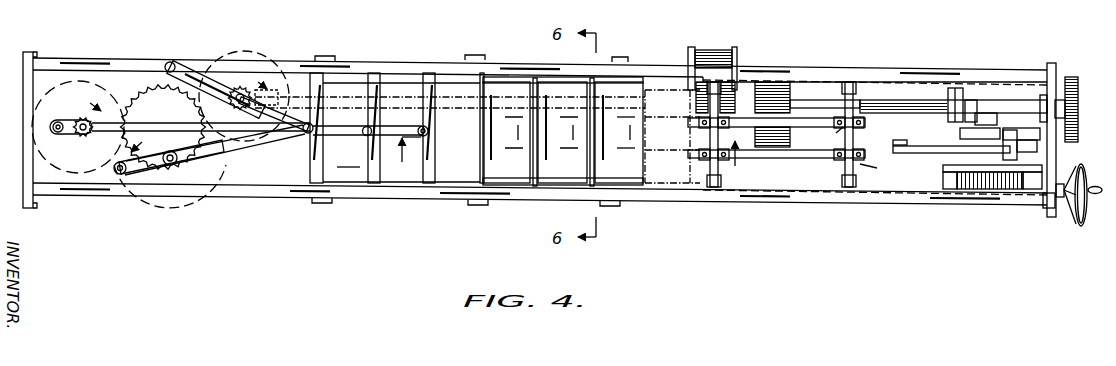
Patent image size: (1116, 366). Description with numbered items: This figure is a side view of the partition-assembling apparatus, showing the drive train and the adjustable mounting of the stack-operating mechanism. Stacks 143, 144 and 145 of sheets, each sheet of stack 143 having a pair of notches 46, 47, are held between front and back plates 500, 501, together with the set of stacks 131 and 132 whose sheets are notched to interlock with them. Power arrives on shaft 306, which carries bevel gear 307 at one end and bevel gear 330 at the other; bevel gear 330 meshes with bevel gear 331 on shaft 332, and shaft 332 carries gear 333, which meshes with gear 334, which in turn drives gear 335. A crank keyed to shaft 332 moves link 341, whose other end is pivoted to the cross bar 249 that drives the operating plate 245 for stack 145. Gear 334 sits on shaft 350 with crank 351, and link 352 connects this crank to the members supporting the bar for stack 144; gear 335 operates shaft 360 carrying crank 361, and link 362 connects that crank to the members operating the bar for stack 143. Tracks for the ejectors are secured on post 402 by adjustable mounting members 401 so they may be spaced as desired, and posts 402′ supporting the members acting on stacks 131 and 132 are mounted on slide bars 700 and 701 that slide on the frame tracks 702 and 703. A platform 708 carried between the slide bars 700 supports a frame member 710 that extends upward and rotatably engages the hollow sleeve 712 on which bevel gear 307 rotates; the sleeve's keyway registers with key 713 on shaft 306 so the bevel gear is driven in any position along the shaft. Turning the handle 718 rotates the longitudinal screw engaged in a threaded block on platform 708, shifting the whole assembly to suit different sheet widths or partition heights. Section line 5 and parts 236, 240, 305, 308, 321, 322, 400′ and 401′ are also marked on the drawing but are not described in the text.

The section line 5- 5 is at (573, 158).
The notch 46 is at (608, 116).
The notch 47 is at (607, 167).
The stack 131 is at (713, 48).
The stack 132 is at (767, 92).
The stack 143 is at (619, 132).
The stack 144 is at (562, 132).
The stack 145 is at (506, 132).
The lever 236 is at (910, 115).
The link 240 is at (223, 87).
The operating plate 245 is at (347, 157).
The cross bar 249 is at (315, 158).
The gear 305 is at (1072, 78).
The shaft 306 is at (407, 100).
The bevel gear 307 is at (968, 100).
The collar 308 is at (983, 112).
The shaft 321 is at (975, 152).
The key 322 is at (893, 142).
The bevel gear 330 is at (268, 89).
The bevel gear 331 is at (247, 92).
The shaft 332 is at (253, 97).
The gear 333 is at (204, 54).
The gear 334 is at (170, 112).
The gear 335 is at (124, 100).
The link 341 is at (190, 68).
The shaft 350 is at (177, 161).
The crank 351 is at (163, 173).
The link 352 is at (249, 149).
The shaft 360 is at (76, 134).
The crank 361 is at (82, 118).
The link 362 is at (390, 128).
The post 400′ is at (802, 164).
The mounting member 401 is at (706, 140).
The upper bar 401′ is at (824, 134).
The post 402 is at (706, 156).
The post 402′ is at (880, 169).
The front plate 500 is at (520, 78).
The back plate 501 is at (497, 78).
The slide bar 700 is at (803, 198).
The slide bar 701 is at (823, 71).
The track 702 is at (900, 71).
The track 703 is at (905, 200).
The platform 708 is at (943, 168).
The frame member 710 is at (963, 135).
The hollow sleeve 712 is at (948, 95).
The key 713 is at (995, 117).
The handle 718 is at (1080, 218).